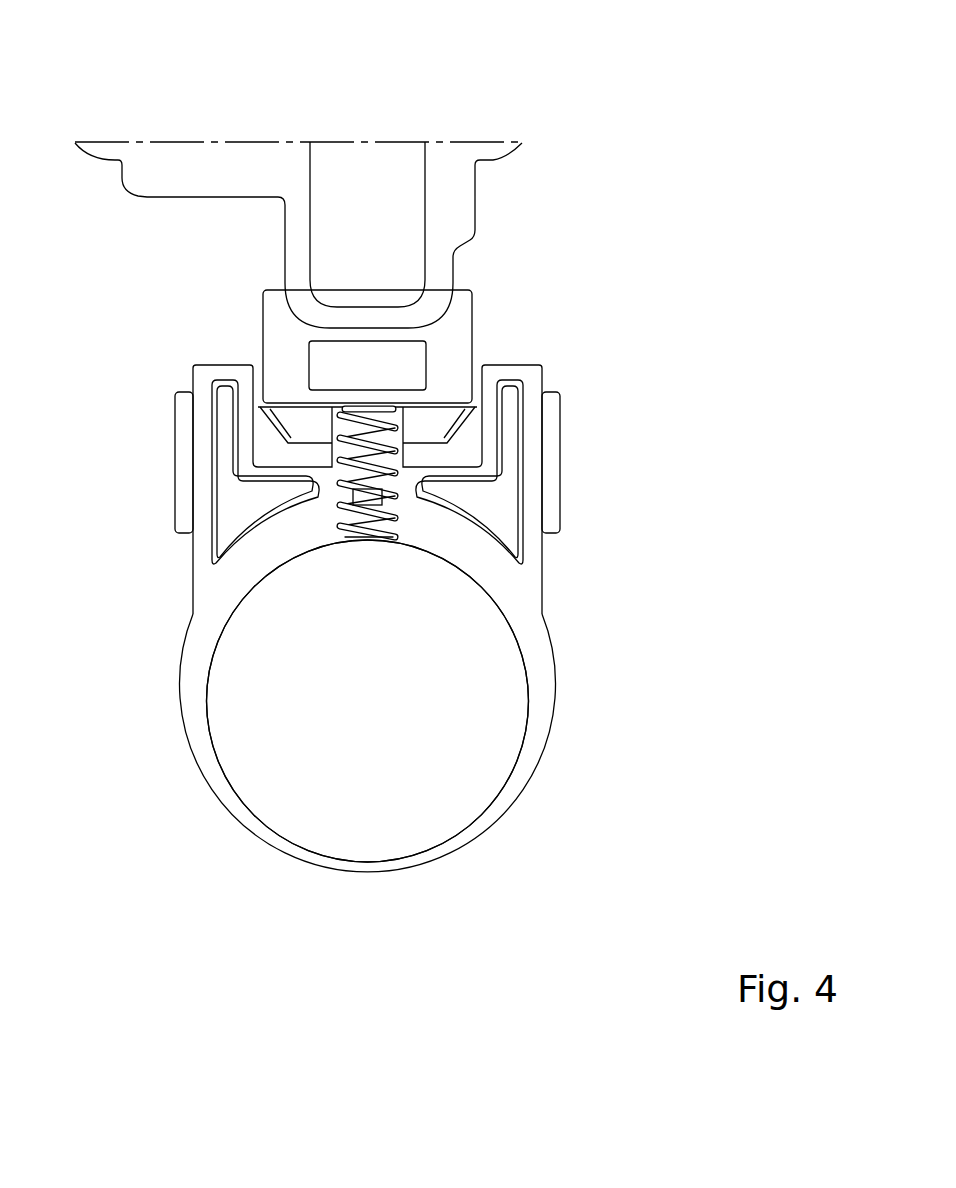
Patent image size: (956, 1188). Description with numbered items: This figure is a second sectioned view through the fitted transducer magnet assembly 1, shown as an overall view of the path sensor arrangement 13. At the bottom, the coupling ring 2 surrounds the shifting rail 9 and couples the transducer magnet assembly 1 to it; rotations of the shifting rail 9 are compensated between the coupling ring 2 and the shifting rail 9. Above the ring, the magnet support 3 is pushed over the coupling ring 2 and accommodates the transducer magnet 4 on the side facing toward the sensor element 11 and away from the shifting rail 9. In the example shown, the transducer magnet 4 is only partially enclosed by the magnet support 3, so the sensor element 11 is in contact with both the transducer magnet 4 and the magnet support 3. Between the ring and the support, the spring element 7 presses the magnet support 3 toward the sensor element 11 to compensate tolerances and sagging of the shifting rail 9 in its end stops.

The transducer magnet assembly 1 is at (590, 562).
The coupling ring 2 is at (513, 597).
The magnet support 3 is at (430, 423).
The transducer magnet 4 is at (400, 362).
The spring element 7 is at (333, 455).
The shifting rail 9 is at (378, 707).
The sensor element 11 is at (448, 225).
The path sensor arrangement 13 is at (189, 112).